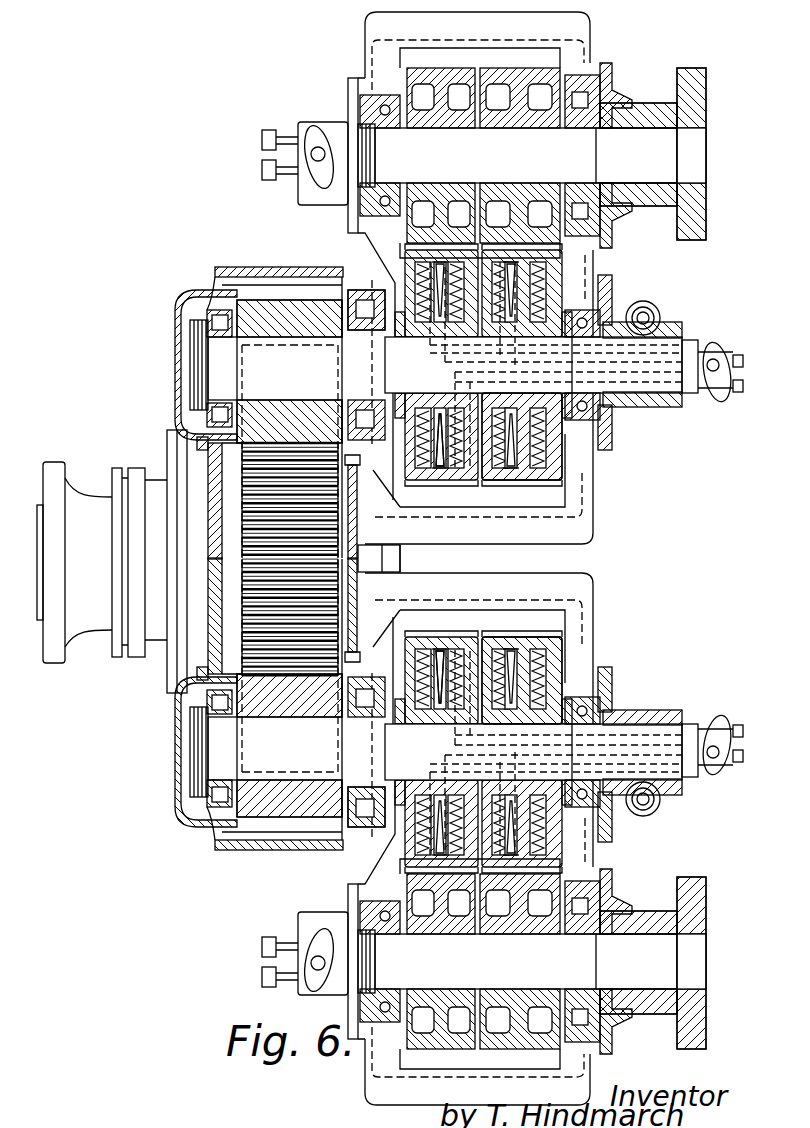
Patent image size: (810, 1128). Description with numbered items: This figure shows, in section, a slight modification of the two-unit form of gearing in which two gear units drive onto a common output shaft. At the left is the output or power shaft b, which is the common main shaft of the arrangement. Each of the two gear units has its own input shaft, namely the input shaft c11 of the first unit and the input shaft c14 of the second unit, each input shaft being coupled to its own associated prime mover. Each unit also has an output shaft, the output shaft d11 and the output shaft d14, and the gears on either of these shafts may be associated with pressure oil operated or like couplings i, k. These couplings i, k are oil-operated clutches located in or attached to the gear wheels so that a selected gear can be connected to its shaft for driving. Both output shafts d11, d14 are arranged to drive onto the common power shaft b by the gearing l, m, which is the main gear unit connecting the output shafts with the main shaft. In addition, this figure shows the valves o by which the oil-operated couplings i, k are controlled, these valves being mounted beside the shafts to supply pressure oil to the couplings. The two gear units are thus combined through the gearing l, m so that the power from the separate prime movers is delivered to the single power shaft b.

The output or power shaft b is at (92, 562).
The gearing m is at (243, 488).
The gearing l is at (292, 302).
The output shaft d11 is at (349, 290).
The output shaft d14 is at (349, 823).
The input shaft c11 is at (620, 148).
The input shaft c14 is at (634, 975).
The valve o is at (646, 314).
The oil-operated clutch or coupling k is at (548, 450).
The oil-operated clutch or coupling i is at (448, 650).